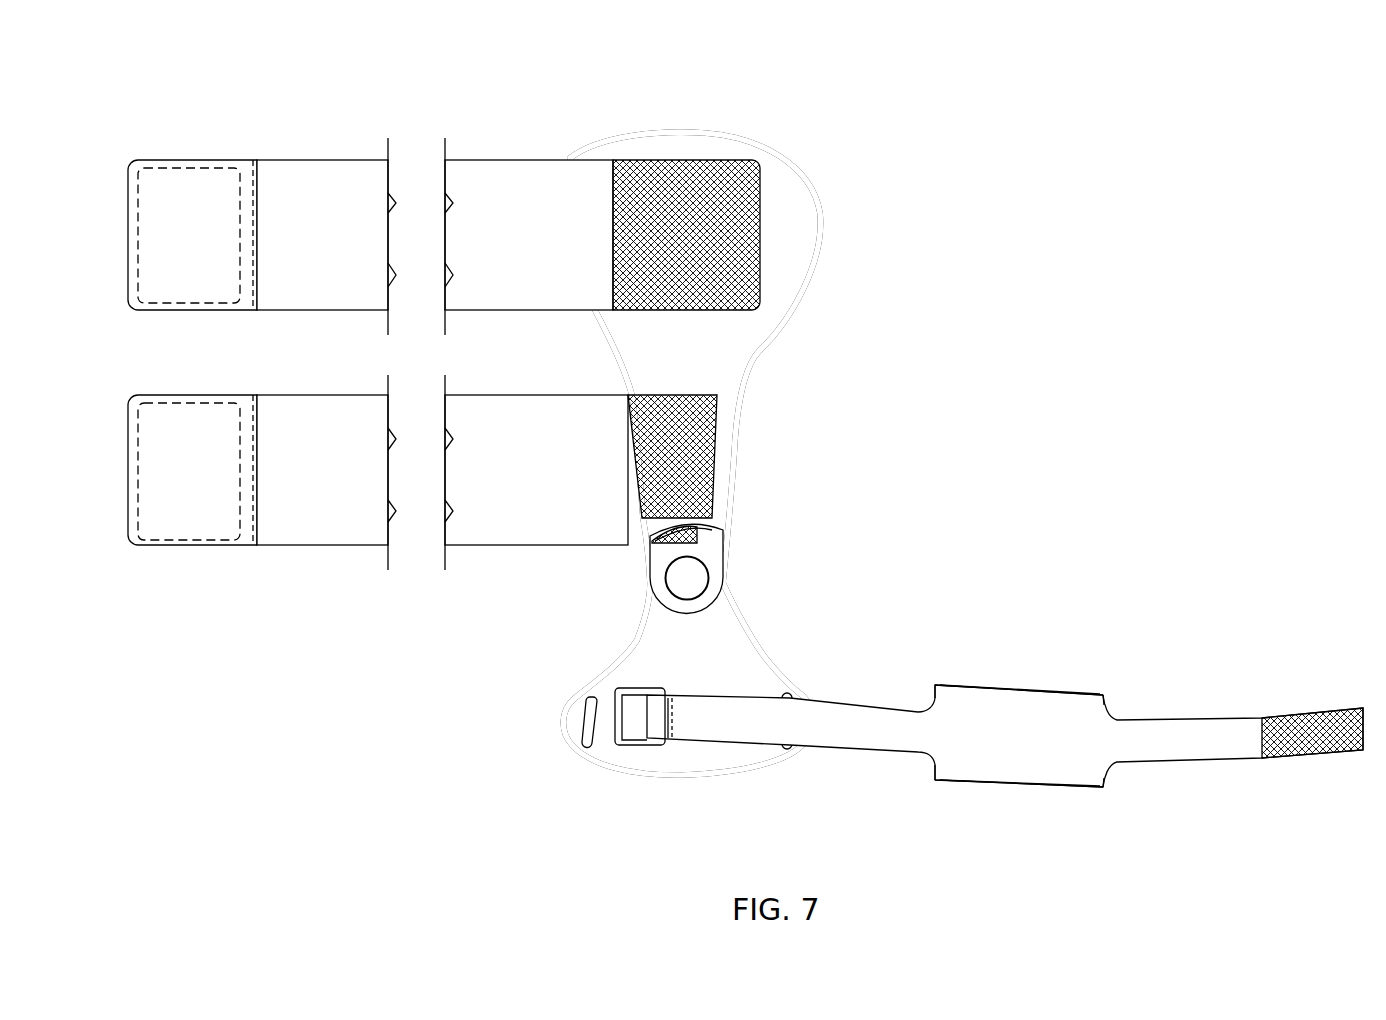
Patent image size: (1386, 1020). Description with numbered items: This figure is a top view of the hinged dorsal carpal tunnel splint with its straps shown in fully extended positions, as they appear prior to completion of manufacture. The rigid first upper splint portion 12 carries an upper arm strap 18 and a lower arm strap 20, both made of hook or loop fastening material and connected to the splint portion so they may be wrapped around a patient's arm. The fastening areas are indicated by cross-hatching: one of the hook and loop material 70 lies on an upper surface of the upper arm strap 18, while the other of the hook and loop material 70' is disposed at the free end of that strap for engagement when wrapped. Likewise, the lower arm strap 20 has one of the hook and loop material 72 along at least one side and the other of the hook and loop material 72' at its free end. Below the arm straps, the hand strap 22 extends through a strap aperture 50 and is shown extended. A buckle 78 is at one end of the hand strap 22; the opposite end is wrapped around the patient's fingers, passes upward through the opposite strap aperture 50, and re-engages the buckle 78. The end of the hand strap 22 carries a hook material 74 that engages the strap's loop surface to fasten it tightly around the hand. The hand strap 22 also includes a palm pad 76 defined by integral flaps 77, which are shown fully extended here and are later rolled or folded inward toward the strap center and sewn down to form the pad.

The rigid first upper splint portion 12 is at (720, 350).
The upper arm strap 18 is at (302, 170).
The lower arm strap 20 is at (335, 518).
The hand strap 22 is at (862, 738).
The strap aperture 50 is at (582, 743).
The hook and loop material 70 is at (764, 235).
The hook and loop material 70' is at (189, 193).
The hook and loop material 72 is at (730, 456).
The hook and loop material 72' is at (204, 447).
The hook material 74 is at (1303, 718).
The palm pad 76 is at (1013, 790).
The integral flaps 77 is at (1062, 705).
The buckle 78 is at (640, 747).